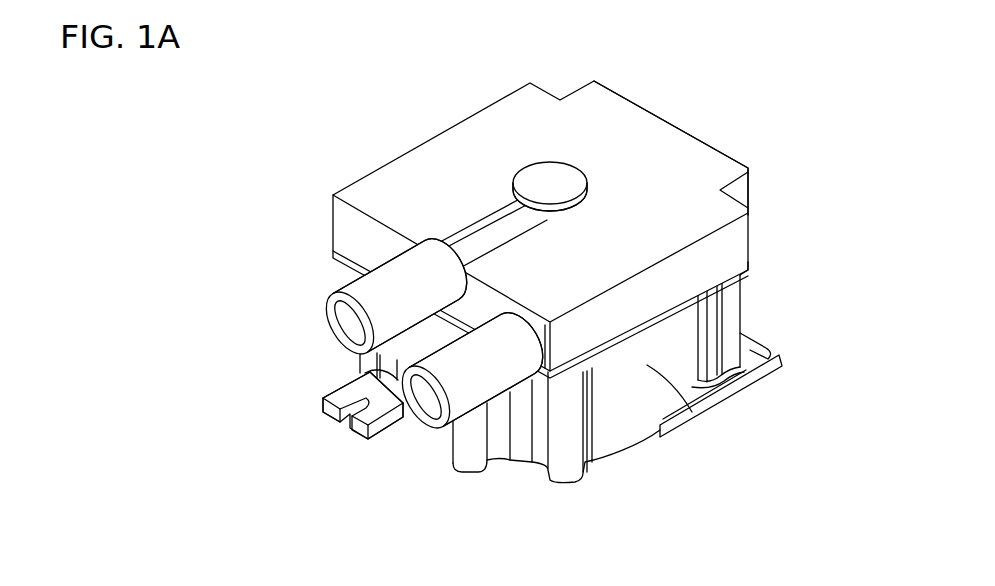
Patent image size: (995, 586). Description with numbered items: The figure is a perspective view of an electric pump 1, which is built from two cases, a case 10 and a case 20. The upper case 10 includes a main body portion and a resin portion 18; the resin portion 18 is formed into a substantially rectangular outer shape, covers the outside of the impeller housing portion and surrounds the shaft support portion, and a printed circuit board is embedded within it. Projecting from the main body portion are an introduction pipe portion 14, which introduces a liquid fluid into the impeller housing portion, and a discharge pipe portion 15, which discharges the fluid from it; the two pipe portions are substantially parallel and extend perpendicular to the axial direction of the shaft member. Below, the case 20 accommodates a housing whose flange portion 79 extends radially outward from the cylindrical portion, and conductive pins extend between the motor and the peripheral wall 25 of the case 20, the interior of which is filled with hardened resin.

The electric pump 1 is at (757, 119).
The case 10 is at (653, 112).
The introduction pipe portion 14 is at (347, 320).
The discharge pipe portion 15 is at (430, 398).
The resin portion 18 is at (737, 164).
The case 20 is at (634, 458).
The peripheral wall 25 is at (692, 412).
The flange portion 79 is at (752, 272).